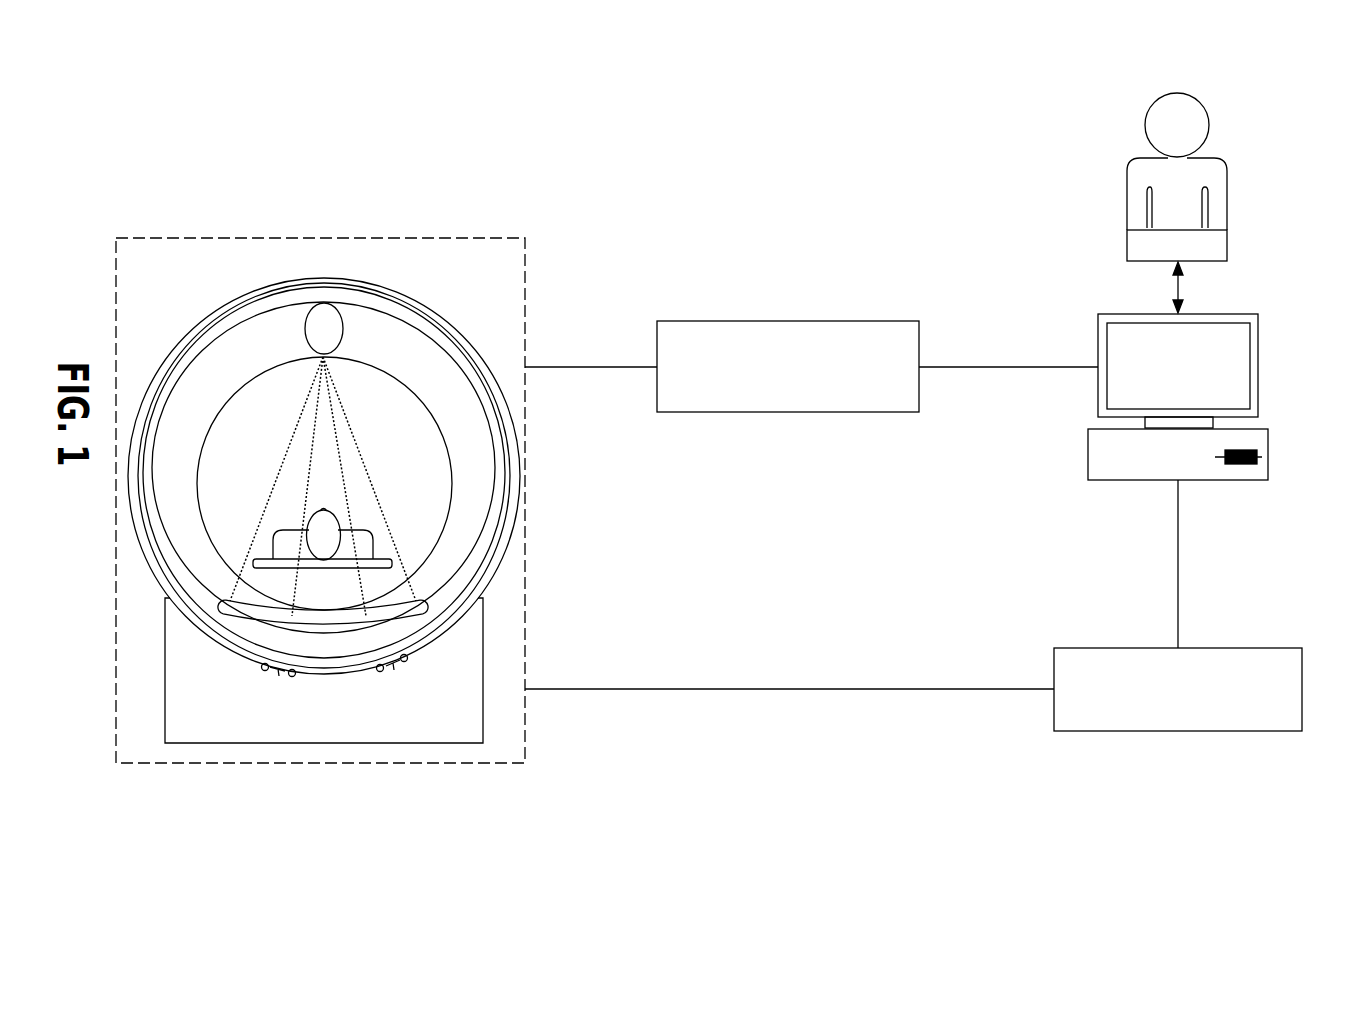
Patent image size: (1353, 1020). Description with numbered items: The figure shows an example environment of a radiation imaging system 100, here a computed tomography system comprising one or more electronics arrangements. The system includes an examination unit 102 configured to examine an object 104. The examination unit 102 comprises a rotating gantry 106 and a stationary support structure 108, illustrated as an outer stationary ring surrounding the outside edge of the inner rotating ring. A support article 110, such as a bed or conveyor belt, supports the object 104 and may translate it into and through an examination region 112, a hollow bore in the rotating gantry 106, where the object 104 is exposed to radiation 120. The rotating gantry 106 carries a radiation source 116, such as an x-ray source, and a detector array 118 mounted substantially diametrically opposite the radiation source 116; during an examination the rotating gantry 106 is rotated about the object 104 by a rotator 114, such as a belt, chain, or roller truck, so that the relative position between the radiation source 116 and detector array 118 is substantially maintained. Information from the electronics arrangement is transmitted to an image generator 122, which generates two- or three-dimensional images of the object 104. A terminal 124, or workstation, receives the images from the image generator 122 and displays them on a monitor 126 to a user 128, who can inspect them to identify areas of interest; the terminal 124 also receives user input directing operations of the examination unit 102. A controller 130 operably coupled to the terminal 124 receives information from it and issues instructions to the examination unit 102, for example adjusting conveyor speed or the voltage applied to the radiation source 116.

The radiation imaging system 100 is at (216, 86).
The examination unit 102 is at (526, 239).
The object 104 is at (310, 517).
The rotating gantry 106 is at (246, 307).
The support structure 108 is at (429, 301).
The support article 110 is at (262, 558).
The examination region 112 is at (310, 478).
The rotator 114 is at (408, 658).
The radiation source 116 is at (341, 330).
The detector array 118 is at (247, 621).
The radiation 120 is at (290, 443).
The image generator 122 is at (1266, 648).
The terminal 124 is at (1268, 429).
The monitor 126 is at (1260, 315).
The user 128 is at (1228, 173).
The controller 130 is at (791, 321).